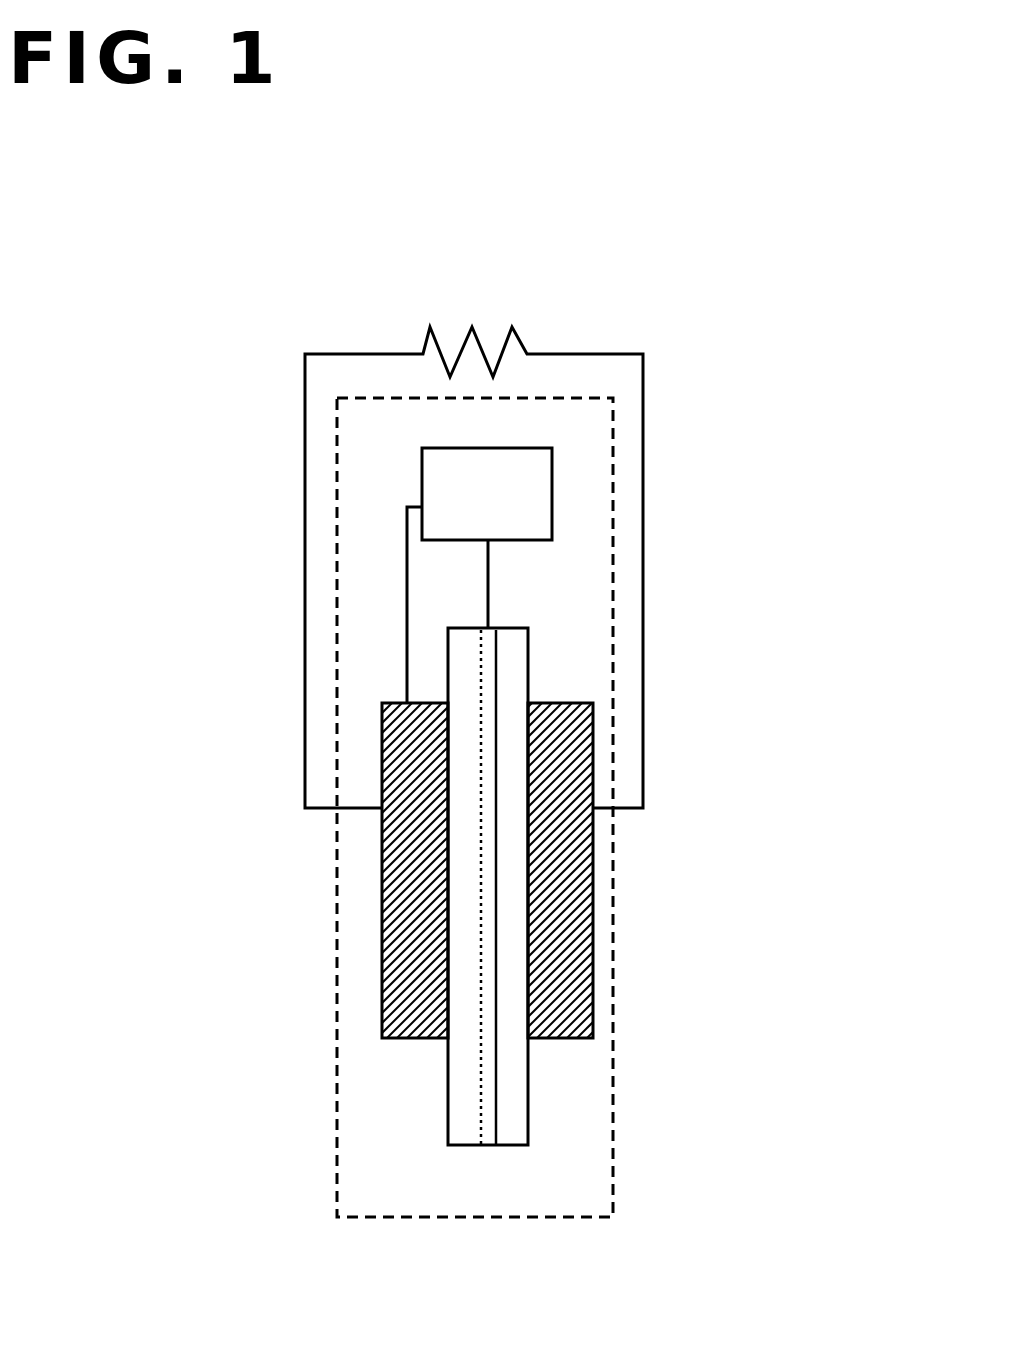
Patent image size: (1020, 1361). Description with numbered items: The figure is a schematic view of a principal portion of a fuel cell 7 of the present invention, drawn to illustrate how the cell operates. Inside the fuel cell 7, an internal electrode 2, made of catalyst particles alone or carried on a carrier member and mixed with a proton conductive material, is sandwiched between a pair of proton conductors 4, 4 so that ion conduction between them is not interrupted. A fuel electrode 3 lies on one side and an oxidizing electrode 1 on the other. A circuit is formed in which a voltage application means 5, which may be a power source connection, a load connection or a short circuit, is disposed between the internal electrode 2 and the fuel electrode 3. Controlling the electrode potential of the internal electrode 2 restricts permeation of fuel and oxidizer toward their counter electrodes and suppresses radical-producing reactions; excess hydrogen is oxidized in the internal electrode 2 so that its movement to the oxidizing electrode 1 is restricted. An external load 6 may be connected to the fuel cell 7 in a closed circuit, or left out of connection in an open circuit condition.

The oxidizing electrode 1 is at (568, 770).
The internal electrode 2 is at (504, 935).
The fuel electrode 3 is at (372, 864).
The proton conductor 4 is at (436, 1138).
The voltage application means 5 is at (561, 486).
The external load 6 is at (541, 326).
The fuel cell 7 is at (624, 1094).